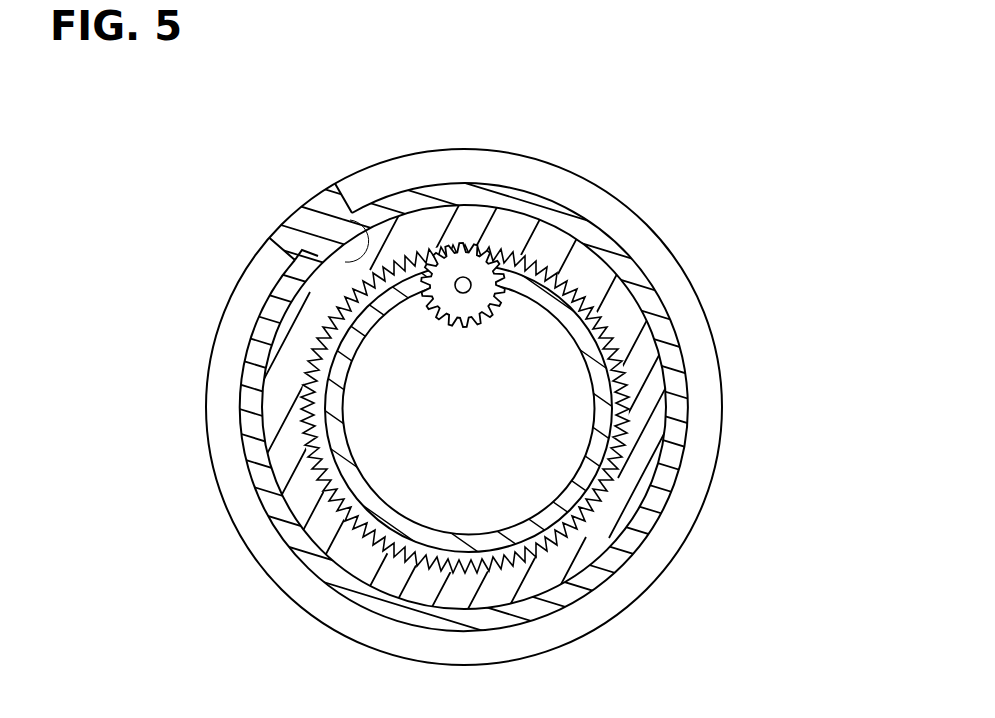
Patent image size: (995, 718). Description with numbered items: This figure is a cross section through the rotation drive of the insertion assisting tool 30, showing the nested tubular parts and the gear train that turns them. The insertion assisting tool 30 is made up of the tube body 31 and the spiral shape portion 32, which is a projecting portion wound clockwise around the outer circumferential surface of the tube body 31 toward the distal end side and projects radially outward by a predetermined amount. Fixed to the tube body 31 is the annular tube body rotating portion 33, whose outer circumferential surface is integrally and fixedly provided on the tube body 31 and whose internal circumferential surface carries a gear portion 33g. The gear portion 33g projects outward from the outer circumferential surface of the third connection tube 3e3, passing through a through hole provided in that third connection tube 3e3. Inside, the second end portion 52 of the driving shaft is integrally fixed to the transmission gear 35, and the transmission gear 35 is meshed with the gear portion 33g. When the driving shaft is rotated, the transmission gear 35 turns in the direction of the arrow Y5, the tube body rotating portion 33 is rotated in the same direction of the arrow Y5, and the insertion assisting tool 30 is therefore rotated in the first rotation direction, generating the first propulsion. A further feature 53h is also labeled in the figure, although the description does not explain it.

The insertion assisting tool 30 is at (495, 64).
The tube body 31 is at (492, 192).
The spiral shape portion 32 is at (455, 278).
The tube body rotating portion 33 is at (552, 238).
The gear portion 33g is at (588, 330).
The transmission gear 35 is at (478, 267).
The second end portion 52 is at (410, 273).
The third connection tube 3e3 is at (300, 350).
The hole 53h is at (323, 257).
The arrow Y5 is at (468, 128).